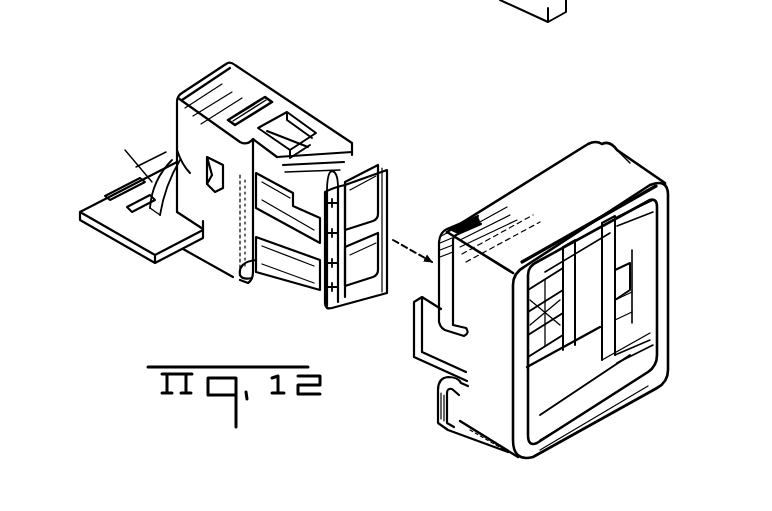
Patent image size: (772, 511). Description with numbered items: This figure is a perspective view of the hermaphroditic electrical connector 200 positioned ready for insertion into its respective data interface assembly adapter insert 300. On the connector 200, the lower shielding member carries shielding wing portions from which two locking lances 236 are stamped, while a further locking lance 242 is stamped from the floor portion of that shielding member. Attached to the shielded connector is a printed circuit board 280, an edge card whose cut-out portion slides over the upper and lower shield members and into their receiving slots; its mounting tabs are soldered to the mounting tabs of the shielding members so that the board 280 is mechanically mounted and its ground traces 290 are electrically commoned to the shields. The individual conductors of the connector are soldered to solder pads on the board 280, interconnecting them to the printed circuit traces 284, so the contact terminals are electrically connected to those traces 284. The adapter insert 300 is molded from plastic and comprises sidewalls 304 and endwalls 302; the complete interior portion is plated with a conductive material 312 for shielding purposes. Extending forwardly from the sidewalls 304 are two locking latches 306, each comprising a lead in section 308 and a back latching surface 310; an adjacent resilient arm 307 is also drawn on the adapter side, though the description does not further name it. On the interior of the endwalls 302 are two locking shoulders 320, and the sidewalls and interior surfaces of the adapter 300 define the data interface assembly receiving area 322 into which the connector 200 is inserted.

The hermaphroditic electrical connector 200 is at (322, 76).
The locking lances 236 is at (285, 130).
The locking lance 242 is at (184, 150).
The printed circuit board 280 is at (113, 236).
The printed circuit traces 284 is at (136, 167).
The ground traces 290 is at (127, 205).
The adapter insert 300 is at (654, 138).
The endwalls 302 is at (557, 185).
The sidewalls 304 is at (670, 268).
The locking latches 306 is at (443, 345).
The spring latch arm 307 is at (447, 232).
The lead in section 308 is at (414, 305).
The back latching surface 310 is at (413, 348).
The conductive material 312 is at (540, 410).
The locking shoulders 320 is at (567, 367).
The data interface assembly receiving area 322 is at (563, 252).